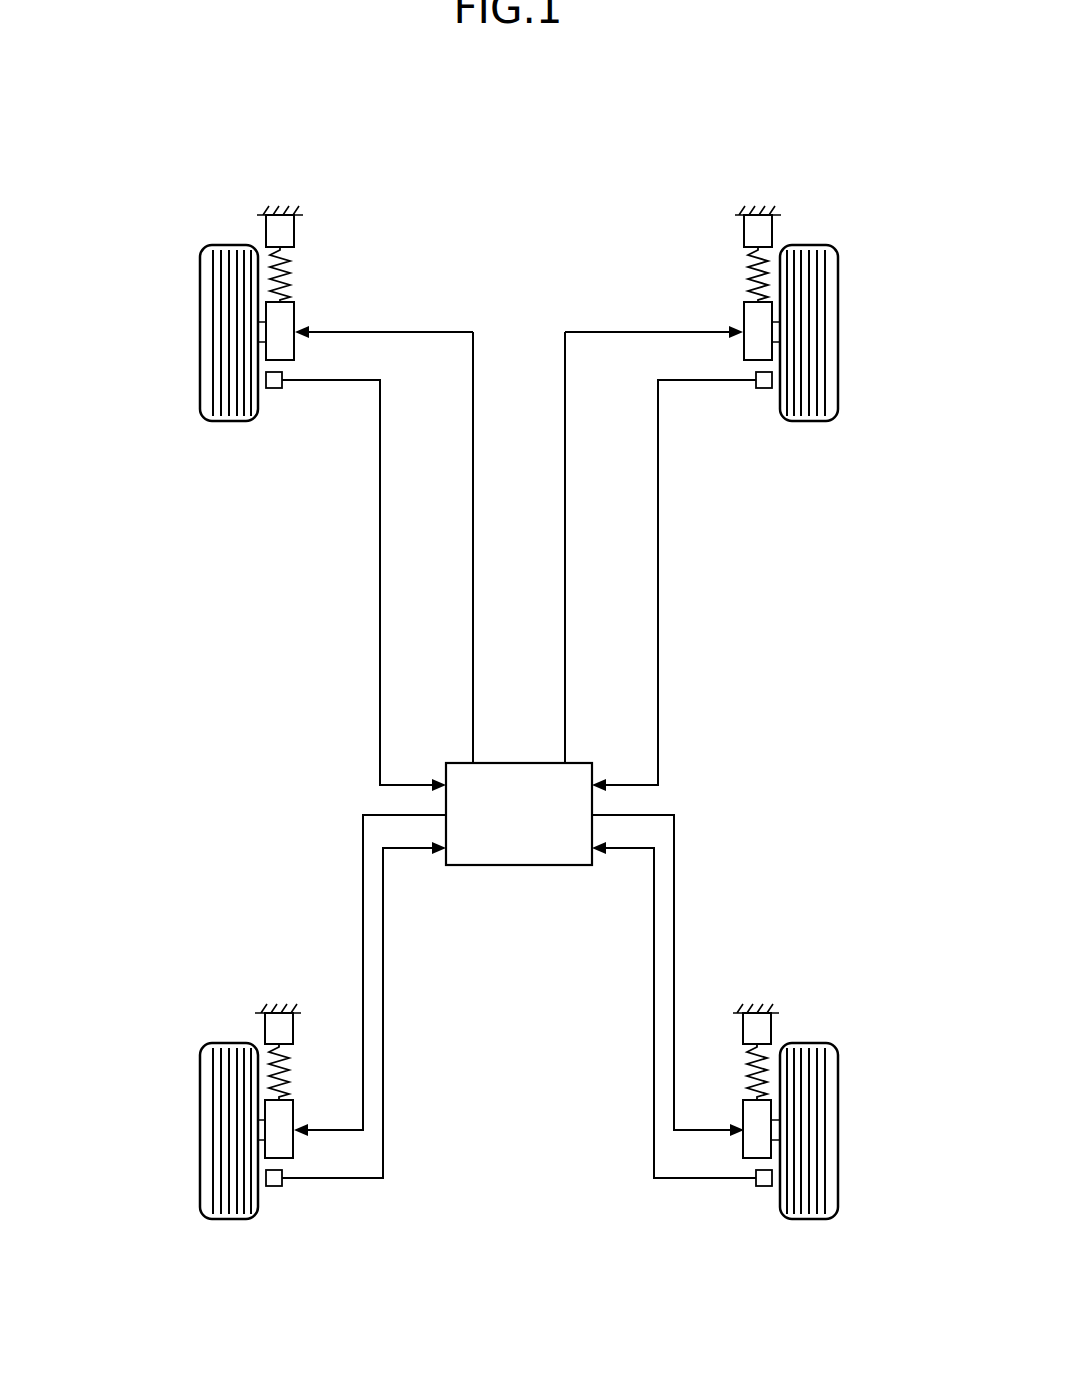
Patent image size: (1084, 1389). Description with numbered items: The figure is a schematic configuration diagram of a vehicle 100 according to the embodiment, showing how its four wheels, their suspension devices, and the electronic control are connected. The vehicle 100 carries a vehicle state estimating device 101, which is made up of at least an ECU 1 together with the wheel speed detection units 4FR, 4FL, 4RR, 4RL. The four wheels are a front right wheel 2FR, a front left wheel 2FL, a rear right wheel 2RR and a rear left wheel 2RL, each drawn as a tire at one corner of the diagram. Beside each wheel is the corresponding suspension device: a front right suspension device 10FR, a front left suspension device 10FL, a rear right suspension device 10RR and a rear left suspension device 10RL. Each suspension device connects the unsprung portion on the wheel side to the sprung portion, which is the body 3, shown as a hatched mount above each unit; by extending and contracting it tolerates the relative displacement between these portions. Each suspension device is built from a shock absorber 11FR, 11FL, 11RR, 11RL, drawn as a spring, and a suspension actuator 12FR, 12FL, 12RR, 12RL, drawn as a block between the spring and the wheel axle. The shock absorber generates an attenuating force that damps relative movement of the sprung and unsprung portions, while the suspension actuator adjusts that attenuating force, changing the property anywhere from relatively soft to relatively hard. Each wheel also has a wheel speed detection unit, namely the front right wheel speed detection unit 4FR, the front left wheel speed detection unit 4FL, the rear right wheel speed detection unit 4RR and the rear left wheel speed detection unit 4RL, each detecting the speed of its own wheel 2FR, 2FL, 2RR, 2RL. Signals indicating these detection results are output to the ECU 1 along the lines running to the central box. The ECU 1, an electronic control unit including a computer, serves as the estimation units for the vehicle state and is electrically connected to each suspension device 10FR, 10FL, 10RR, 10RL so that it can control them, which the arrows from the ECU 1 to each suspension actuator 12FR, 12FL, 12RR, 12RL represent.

The vehicle 100 is at (119, 187).
The vehicle state estimating device 101 is at (299, 573).
The ECU 1 is at (577, 763).
The front left wheel 2FL is at (200, 335).
The front right wheel 2FR is at (838, 330).
The rear left wheel 2RL is at (200, 1133).
The rear right wheel 2RR is at (838, 1130).
The body 3 is at (257, 215).
The front left wheel speed detection unit 4FL is at (273, 388).
The front right wheel speed detection unit 4FR is at (765, 388).
The rear left wheel speed detection unit 4RL is at (273, 1186).
The rear right wheel speed detection unit 4RR is at (760, 1186).
The front left suspension device 10FL is at (356, 231).
The front right suspension device 10FR is at (682, 231).
The rear left suspension device 10RL is at (356, 1181).
The rear right suspension device 10RR is at (680, 1181).
The shock absorber 11FL is at (282, 272).
The shock absorber 11FR is at (756, 272).
The shock absorber 11RL is at (290, 1070).
The shock absorber 11RR is at (747, 1070).
The suspension actuator 12FL is at (295, 312).
The suspension actuator 12FR is at (743, 312).
The suspension actuator 12RL is at (293, 1145).
The suspension actuator 12RR is at (743, 1145).